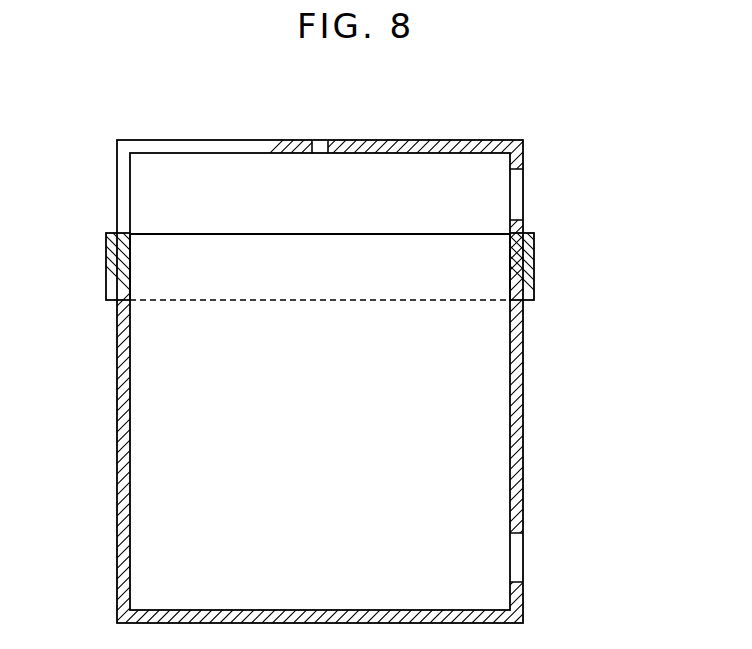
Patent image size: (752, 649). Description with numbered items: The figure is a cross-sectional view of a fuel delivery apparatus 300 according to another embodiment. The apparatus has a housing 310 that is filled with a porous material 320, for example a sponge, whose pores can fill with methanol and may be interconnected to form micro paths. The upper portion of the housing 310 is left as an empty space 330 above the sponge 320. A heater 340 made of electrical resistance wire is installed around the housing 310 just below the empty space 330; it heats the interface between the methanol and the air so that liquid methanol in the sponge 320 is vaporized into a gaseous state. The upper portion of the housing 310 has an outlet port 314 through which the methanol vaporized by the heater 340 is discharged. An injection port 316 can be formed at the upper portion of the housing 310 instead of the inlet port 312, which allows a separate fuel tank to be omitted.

The fuel delivery apparatus 300 is at (595, 148).
The housing 310 is at (118, 459).
The inlet port 312 is at (515, 555).
The outlet port 314 is at (517, 191).
The injection port 316 is at (318, 147).
The porous material 320 is at (152, 388).
The empty space 330 is at (150, 193).
The heater 340 is at (534, 268).